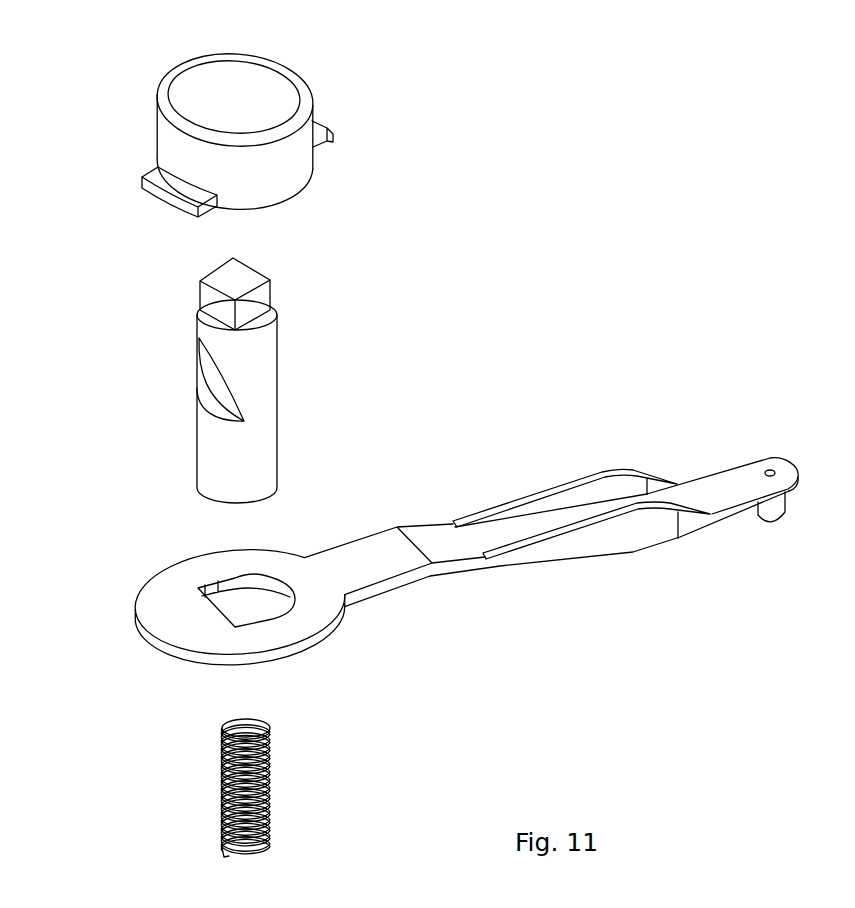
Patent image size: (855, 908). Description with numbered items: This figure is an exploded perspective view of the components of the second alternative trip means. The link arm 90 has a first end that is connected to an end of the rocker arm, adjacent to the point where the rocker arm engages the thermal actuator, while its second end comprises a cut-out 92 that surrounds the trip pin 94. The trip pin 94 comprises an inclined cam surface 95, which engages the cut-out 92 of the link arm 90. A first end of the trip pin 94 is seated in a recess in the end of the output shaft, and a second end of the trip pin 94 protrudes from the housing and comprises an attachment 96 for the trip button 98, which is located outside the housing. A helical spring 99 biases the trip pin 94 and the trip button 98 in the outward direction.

The trip button 98 is at (175, 150).
The attachment 96 is at (205, 298).
The inclined cam surface 95 is at (208, 371).
The trip pin 94 is at (211, 453).
The cut-out 92 is at (216, 598).
The link arm 90 is at (415, 561).
The helical spring 99 is at (222, 782).